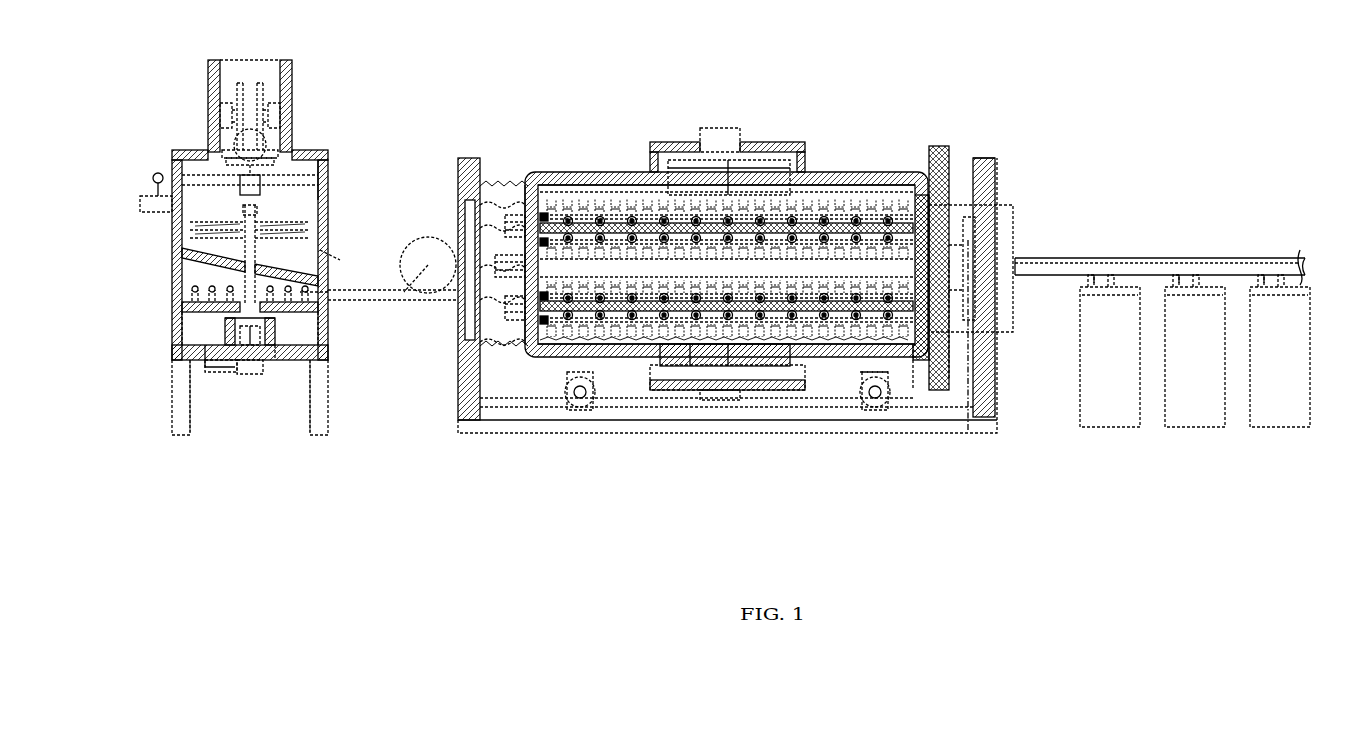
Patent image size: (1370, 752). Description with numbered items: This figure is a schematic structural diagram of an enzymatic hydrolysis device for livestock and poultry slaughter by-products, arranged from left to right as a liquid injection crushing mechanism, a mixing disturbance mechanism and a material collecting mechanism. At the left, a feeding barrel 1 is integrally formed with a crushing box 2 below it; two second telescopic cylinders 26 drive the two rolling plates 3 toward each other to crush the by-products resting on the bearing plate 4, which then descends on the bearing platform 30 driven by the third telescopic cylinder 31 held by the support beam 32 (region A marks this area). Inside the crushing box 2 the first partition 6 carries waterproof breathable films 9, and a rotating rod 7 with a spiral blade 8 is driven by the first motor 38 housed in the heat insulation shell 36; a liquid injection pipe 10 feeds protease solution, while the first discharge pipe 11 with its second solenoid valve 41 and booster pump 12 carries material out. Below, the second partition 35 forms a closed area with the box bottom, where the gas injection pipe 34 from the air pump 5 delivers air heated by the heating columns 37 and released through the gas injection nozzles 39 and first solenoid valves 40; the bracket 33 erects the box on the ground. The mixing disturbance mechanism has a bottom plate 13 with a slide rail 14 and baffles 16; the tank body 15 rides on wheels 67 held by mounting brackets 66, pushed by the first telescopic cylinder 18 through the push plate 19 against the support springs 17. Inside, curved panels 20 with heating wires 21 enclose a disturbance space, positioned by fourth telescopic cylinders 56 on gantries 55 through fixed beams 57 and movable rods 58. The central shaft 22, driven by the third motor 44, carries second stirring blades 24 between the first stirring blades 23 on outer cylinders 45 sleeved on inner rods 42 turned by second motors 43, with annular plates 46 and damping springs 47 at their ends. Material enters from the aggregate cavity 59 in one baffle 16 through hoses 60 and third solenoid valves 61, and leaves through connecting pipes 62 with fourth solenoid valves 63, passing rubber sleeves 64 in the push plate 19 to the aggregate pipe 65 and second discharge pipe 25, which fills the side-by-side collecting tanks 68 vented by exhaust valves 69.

The feeding barrel 1 is at (295, 68).
The crushing box 2 is at (323, 192).
The rolling plates 3 is at (258, 90).
The bearing plate 4 is at (235, 150).
The air pump 5 is at (262, 350).
The first partition 6 is at (195, 260).
The rotating rod 7 is at (228, 358).
The spiral blade 8 is at (300, 220).
The waterproof breathable films 9 is at (195, 290).
The liquid injection pipe 10 is at (176, 205).
The first discharge pipe 11 is at (330, 250).
The booster pump 12 is at (445, 280).
The bottom plate 13 is at (530, 424).
The slide rail 14 is at (560, 408).
The tank body 15 is at (622, 360).
The baffles 16 is at (470, 418).
The support springs 17 is at (492, 185).
The first telescopic cylinder 18 is at (968, 300).
The push plate 19 is at (938, 200).
The curved panels 20 is at (552, 214).
The heating wires 21 is at (583, 230).
The central shaft 22 is at (832, 262).
The first stirring blades 23 is at (616, 252).
The second stirring blades 24 is at (652, 142).
The second discharge pipe 25 is at (1038, 262).
The second telescopic cylinders 26 is at (226, 110).
The bearing platform 30 is at (238, 160).
The third telescopic cylinder 31 is at (245, 183).
The support beam 32 is at (322, 172).
The bracket 33 is at (318, 415).
The gas injection pipe 34 is at (205, 368).
The second partition 35 is at (190, 307).
The heat insulation shell 36 is at (278, 352).
The heating columns 37 is at (322, 350).
The first motor 38 is at (252, 362).
The gas injection nozzles 39 is at (320, 296).
The first solenoid valves 40 is at (190, 330).
The second solenoid valve 41 is at (338, 242).
The inner rods 42 is at (690, 382).
The second motors 43 is at (508, 318).
The third motor 44 is at (502, 282).
The outer cylinders 45 is at (745, 352).
The annular plates 46 is at (918, 352).
The damping springs 47 is at (920, 250).
The gantries 55 is at (722, 128).
The fourth telescopic cylinders 56 is at (730, 165).
The fixed beams 57 is at (752, 148).
The movable rods 58 is at (790, 178).
The aggregate cavity 59 is at (470, 220).
The hoses 60 is at (470, 192).
The third solenoid valves 61 is at (532, 190).
The connecting pipes 62 is at (988, 160).
The fourth solenoid valves 63 is at (940, 365).
The rubber sleeves 64 is at (983, 200).
The aggregate pipe 65 is at (1010, 205).
The mounting brackets 66 is at (880, 378).
The wheels 67 is at (858, 398).
The collecting tanks 68 is at (1103, 403).
The exhaust valves 69 is at (1165, 265).
The detail region A is at (265, 150).